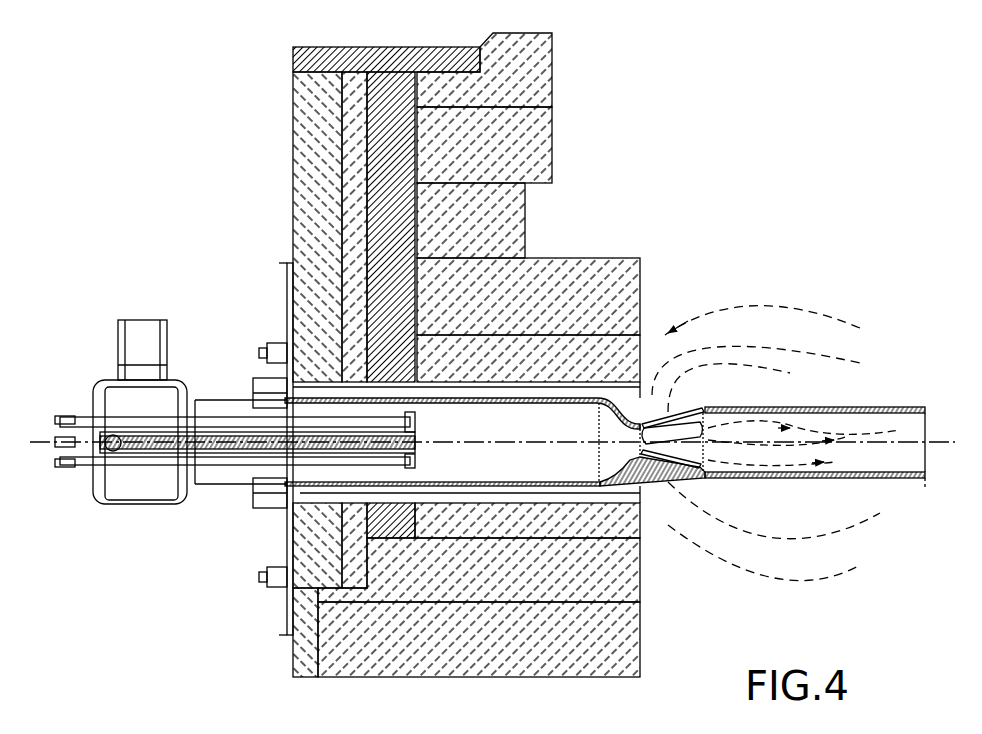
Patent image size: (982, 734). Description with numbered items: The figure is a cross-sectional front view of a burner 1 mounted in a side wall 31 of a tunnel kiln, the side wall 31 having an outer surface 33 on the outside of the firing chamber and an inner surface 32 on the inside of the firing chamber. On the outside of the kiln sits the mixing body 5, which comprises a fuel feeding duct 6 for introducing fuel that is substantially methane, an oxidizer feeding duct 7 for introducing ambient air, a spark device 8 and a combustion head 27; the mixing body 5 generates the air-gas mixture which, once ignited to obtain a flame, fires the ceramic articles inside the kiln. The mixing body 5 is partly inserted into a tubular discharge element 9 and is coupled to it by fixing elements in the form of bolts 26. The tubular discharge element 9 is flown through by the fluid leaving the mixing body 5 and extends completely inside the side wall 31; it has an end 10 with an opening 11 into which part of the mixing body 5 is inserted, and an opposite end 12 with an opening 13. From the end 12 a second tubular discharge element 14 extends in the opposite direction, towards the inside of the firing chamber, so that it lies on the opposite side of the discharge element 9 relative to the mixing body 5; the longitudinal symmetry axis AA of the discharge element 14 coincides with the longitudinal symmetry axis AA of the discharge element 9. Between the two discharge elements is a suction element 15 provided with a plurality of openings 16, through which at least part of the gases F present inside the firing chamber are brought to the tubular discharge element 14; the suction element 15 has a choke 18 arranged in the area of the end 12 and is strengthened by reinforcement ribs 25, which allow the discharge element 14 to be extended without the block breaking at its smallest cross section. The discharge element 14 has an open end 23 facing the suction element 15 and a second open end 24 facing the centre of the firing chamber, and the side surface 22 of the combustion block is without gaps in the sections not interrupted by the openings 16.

The burner 1 is at (248, 270).
The mixing body 5 is at (146, 505).
The fuel feeding duct 6 is at (218, 446).
The oxidizer feeding duct 7 is at (127, 349).
The spark device 8 is at (412, 411).
The tubular discharge element 9 is at (512, 492).
The end 10 is at (266, 512).
The opening 11 is at (268, 486).
The end 12 is at (603, 491).
The opening 13 is at (603, 450).
The tubular discharge element 14 is at (802, 480).
The suction element 15 is at (643, 400).
The openings 16 is at (648, 425).
The choke 18 is at (654, 508).
The side surface 22 is at (642, 284).
The open end 23 is at (712, 459).
The second open end 24 is at (924, 426).
The reinforcement ribs 25 is at (689, 391).
The bolts 26 is at (276, 342).
The combustion head 27 is at (423, 438).
The side wall 31 is at (547, 213).
The inner surface 32 is at (642, 661).
The outer surface 33 is at (292, 213).
The gases F is at (766, 446).
The longitudinal symmetry axis AA is at (922, 495).